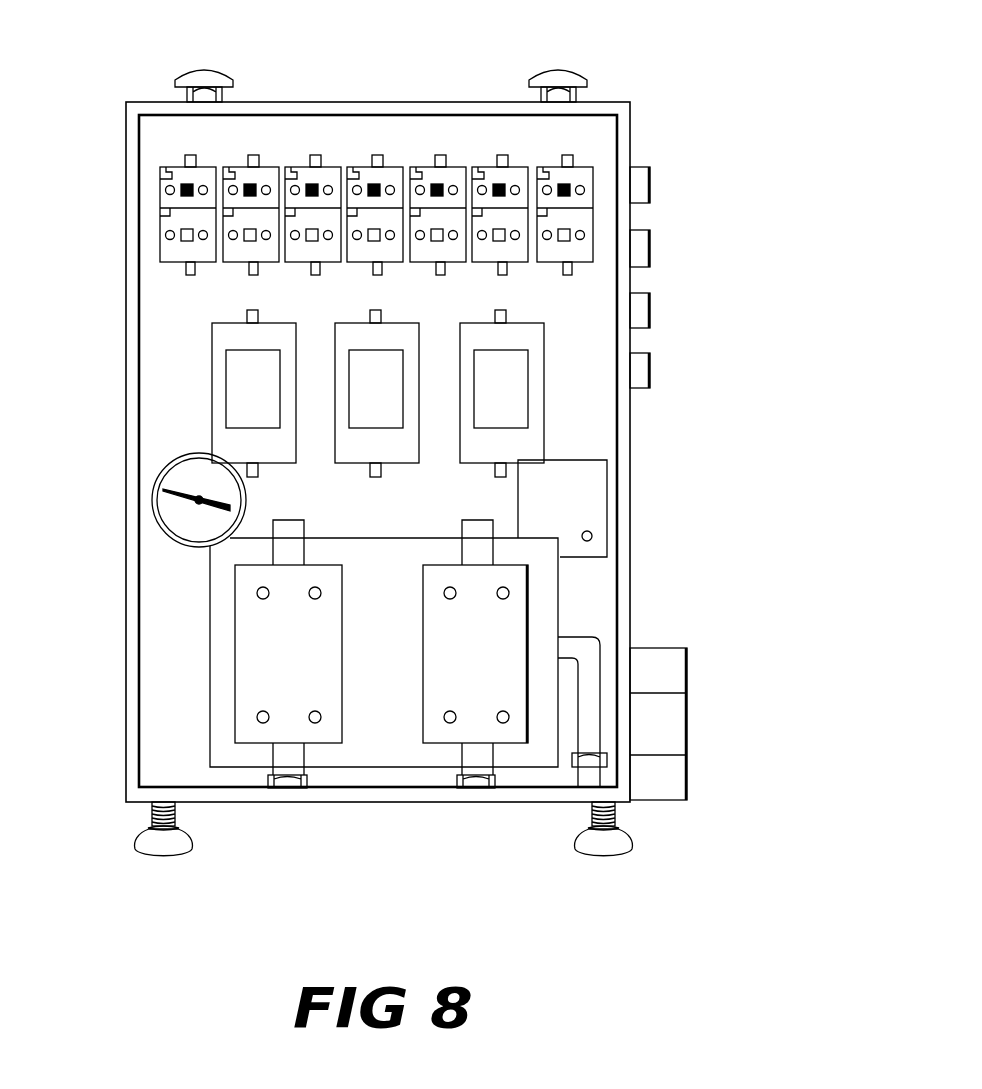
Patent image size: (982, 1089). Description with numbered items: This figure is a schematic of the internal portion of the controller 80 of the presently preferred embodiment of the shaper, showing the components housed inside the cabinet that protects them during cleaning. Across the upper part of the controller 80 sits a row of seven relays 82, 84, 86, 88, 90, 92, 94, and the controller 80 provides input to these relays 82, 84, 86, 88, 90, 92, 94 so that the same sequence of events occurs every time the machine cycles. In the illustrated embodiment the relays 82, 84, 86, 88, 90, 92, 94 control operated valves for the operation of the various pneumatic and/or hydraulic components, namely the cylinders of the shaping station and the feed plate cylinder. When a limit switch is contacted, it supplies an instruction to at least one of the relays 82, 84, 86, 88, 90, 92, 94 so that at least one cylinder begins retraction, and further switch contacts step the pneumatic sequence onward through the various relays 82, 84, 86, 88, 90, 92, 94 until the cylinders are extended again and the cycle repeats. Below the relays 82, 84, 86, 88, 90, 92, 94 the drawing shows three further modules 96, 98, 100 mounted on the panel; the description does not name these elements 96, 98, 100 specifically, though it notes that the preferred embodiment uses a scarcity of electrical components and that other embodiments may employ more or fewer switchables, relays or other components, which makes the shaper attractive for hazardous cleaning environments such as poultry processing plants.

The controller 80 is at (752, 533).
The relay 82 is at (582, 175).
The relay 84 is at (527, 173).
The relay 86 is at (450, 177).
The relay 88 is at (395, 173).
The relay 90 is at (330, 173).
The relay 92 is at (270, 175).
The relay 94 is at (183, 176).
The contactor 96 is at (512, 405).
The contactor 98 is at (373, 373).
The contactor 100 is at (253, 403).